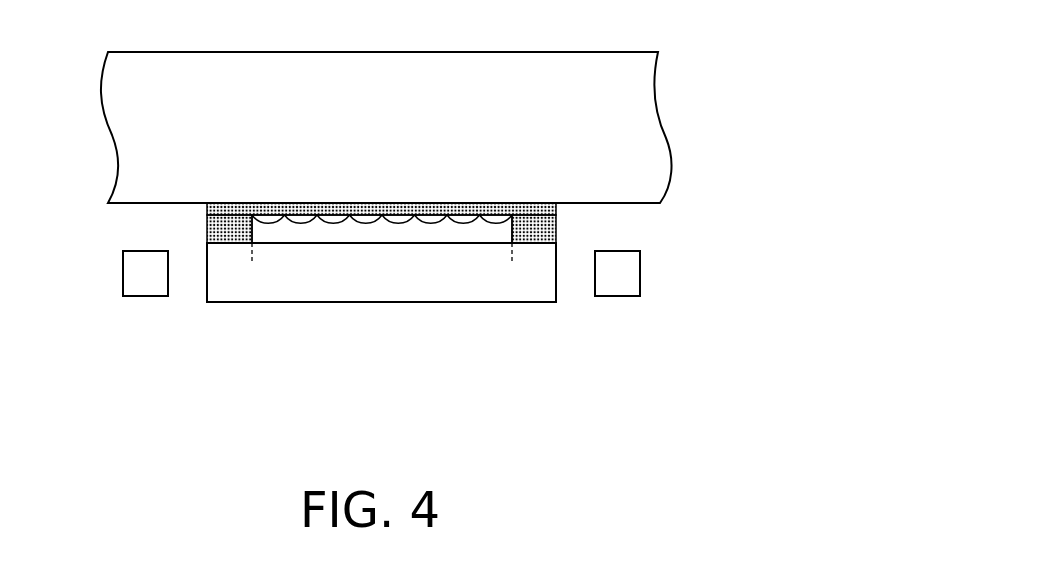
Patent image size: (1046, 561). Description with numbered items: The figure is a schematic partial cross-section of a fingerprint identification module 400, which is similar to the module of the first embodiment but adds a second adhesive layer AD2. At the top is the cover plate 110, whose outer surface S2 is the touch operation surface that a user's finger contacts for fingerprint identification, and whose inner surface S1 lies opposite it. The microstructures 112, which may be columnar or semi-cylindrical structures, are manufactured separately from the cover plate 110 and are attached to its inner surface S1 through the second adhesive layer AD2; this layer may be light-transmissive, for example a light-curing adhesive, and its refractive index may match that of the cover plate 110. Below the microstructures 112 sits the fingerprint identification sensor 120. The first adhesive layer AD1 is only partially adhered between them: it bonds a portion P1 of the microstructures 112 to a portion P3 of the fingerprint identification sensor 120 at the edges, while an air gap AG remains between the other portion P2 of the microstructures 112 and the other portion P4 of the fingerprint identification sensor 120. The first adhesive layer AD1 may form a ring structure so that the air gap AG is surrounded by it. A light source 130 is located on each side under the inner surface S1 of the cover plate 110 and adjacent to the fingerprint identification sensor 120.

The fingerprint identification module 400 is at (400, 210).
The cover plate 110 is at (620, 130).
The inner surface S1 is at (644, 207).
The outer surface S2 is at (603, 51).
The second adhesive layer AD2 is at (208, 203).
The first adhesive layer AD1 is at (207, 231).
The microstructures 112 is at (431, 223).
The air gap AG is at (297, 235).
The fingerprint identification sensor 120 is at (493, 290).
The light source 130 is at (135, 272).
The portion of the microstructures P1 is at (252, 199).
The other portion of the microstructures P2 is at (510, 199).
The portion of the fingerprint identification sensor P3 is at (250, 256).
The other portion of the fingerprint identification sensor P4 is at (510, 256).